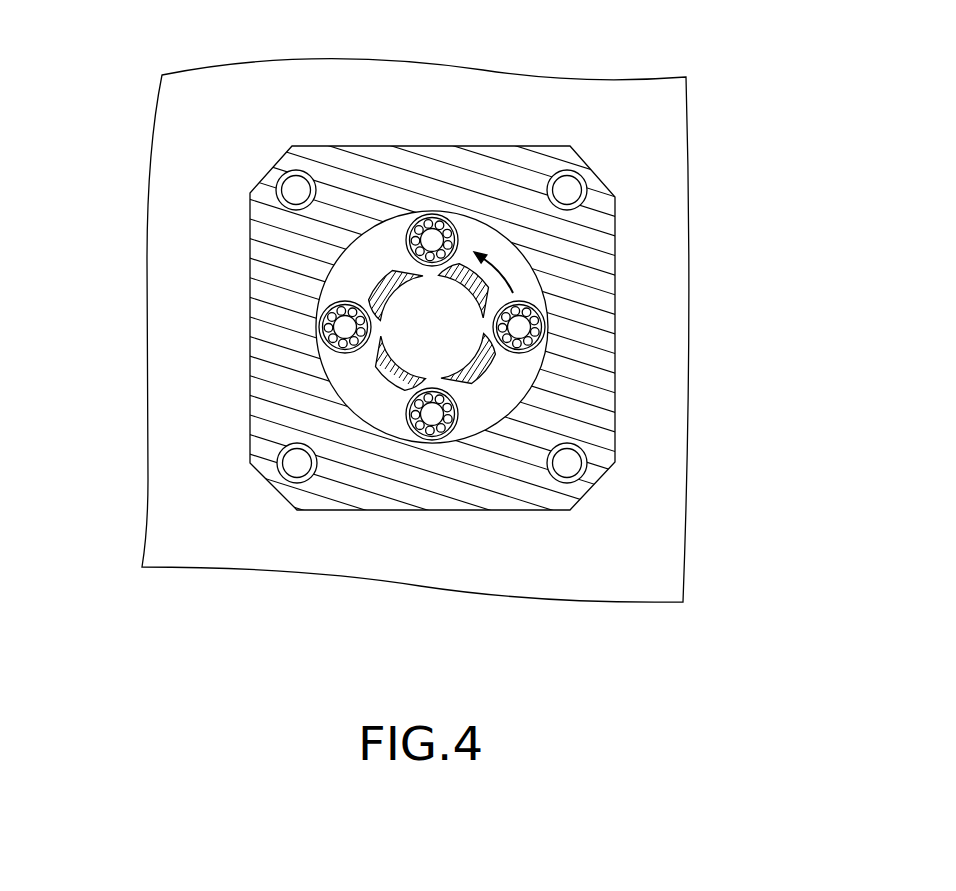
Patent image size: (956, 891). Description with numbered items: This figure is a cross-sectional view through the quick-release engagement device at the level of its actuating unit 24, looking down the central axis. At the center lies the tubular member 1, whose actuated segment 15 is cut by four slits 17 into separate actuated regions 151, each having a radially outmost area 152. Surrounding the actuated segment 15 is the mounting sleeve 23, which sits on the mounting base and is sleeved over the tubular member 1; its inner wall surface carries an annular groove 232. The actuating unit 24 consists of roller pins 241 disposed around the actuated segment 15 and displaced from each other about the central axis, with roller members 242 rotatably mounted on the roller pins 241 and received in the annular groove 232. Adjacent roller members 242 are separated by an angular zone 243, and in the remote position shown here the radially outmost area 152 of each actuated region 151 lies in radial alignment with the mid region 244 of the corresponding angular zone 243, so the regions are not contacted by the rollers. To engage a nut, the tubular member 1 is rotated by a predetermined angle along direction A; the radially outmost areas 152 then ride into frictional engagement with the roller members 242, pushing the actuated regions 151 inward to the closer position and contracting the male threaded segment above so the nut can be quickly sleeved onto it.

The tubular member 1 is at (415, 331).
The actuated segment 15 is at (307, 308).
The actuated regions 151 is at (463, 267).
The radially outmost area 152 is at (390, 283).
The slits 17 is at (432, 380).
The mounting sleeve 23 is at (492, 165).
The annular groove 232 is at (543, 285).
The actuating unit 24 is at (774, 340).
The roller pins 241 is at (523, 328).
The roller members 242 is at (543, 338).
The angular zone 243 is at (352, 295).
The mid region 244 is at (377, 385).
The direction A is at (500, 268).